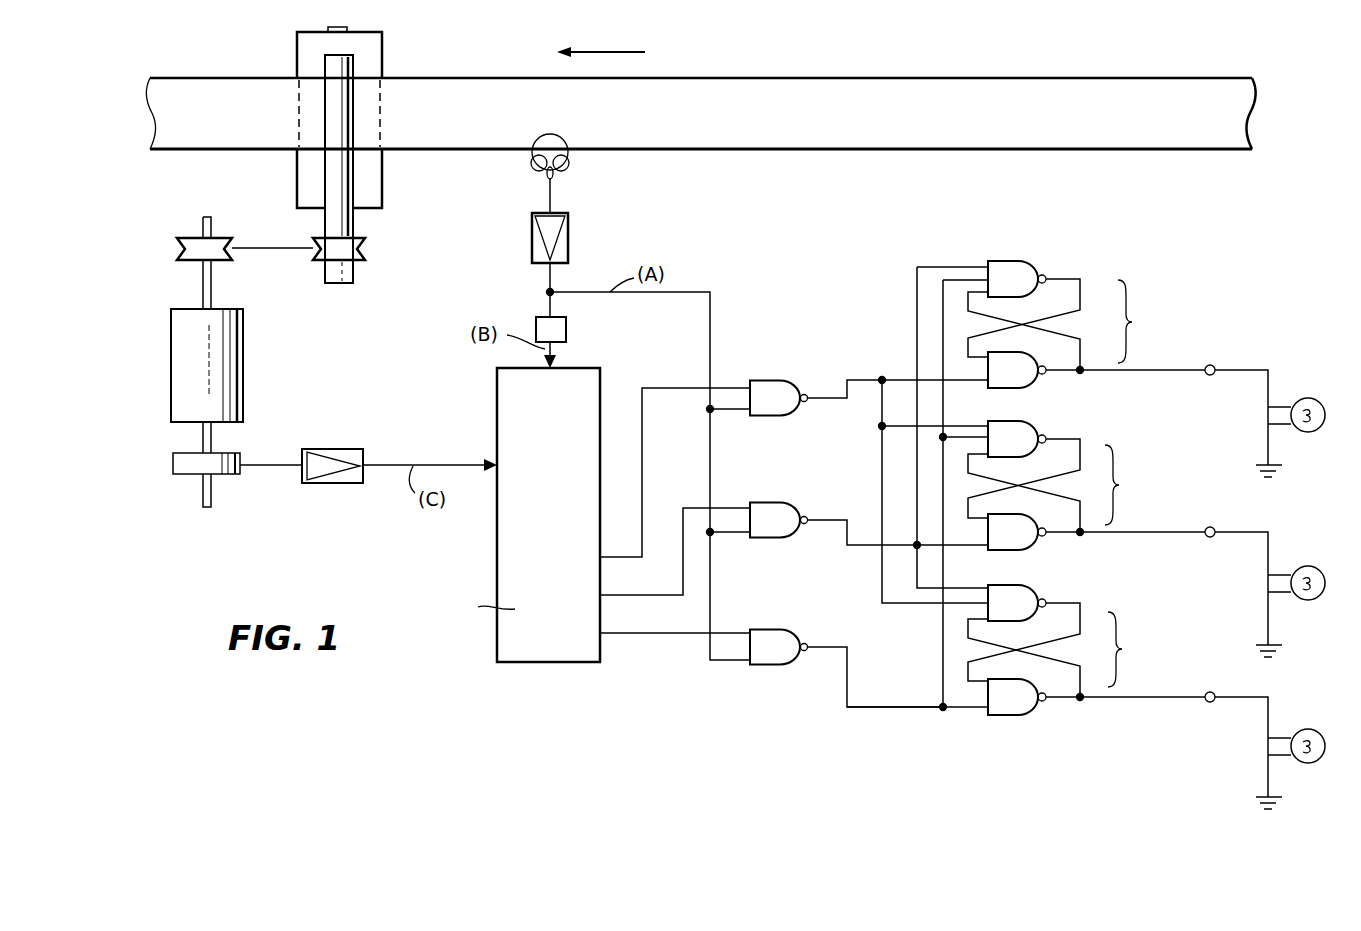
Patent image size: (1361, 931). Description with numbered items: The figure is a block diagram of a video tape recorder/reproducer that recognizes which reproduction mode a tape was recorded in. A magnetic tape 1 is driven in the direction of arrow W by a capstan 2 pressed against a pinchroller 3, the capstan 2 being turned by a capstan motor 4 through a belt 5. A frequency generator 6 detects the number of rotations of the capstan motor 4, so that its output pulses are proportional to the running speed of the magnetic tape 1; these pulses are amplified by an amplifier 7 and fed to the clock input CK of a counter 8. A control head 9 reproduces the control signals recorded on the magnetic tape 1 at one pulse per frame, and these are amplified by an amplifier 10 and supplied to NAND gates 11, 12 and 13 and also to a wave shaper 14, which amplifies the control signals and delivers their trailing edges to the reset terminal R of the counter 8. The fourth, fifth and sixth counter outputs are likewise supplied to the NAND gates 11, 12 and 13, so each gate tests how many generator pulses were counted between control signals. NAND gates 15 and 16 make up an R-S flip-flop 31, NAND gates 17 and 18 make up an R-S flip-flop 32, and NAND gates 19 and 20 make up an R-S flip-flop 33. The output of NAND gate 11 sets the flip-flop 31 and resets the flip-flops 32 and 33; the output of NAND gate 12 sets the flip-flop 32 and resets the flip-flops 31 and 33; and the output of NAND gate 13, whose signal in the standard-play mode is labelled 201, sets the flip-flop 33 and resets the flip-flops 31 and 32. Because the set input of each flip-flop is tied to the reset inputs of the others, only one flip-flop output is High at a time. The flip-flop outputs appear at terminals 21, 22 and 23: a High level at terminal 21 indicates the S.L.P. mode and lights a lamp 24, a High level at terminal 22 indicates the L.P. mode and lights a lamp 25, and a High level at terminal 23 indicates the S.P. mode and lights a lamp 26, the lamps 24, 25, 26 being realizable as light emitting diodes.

The magnetic tape 1 is at (1053, 77).
The capstan 2 is at (353, 236).
The pinchroller 3 is at (380, 45).
The capstan motor 4 is at (170, 358).
The belt 5 is at (253, 248).
The frequency generator 6 is at (188, 470).
The amplifier 7 is at (334, 484).
The counter 8 is at (526, 664).
The control head 9 is at (570, 158).
The amplifier 10 is at (570, 244).
The NAND gate 11 is at (763, 383).
The NAND gate 12 is at (763, 500).
The NAND gate 13 is at (763, 626).
The wave shaper 14 is at (566, 330).
The NAND gate 15 is at (1017, 260).
The NAND gate 16 is at (1035, 362).
The NAND gate 17 is at (1030, 432).
The NAND gate 18 is at (1028, 520).
The NAND gate 19 is at (1025, 596).
The NAND gate 20 is at (1025, 688).
The terminal 21 is at (1211, 364).
The terminal 22 is at (1210, 527).
The terminal 23 is at (1205, 692).
The lamp 24 is at (1316, 398).
The lamp 25 is at (1316, 565).
The lamp 26 is at (1317, 730).
The R-S flip-flop 31 is at (1138, 321).
The R-S flip-flop 32 is at (1126, 485).
The R-S flip-flop 33 is at (1129, 649).
The output signal of NAND gate 13 201 is at (861, 709).